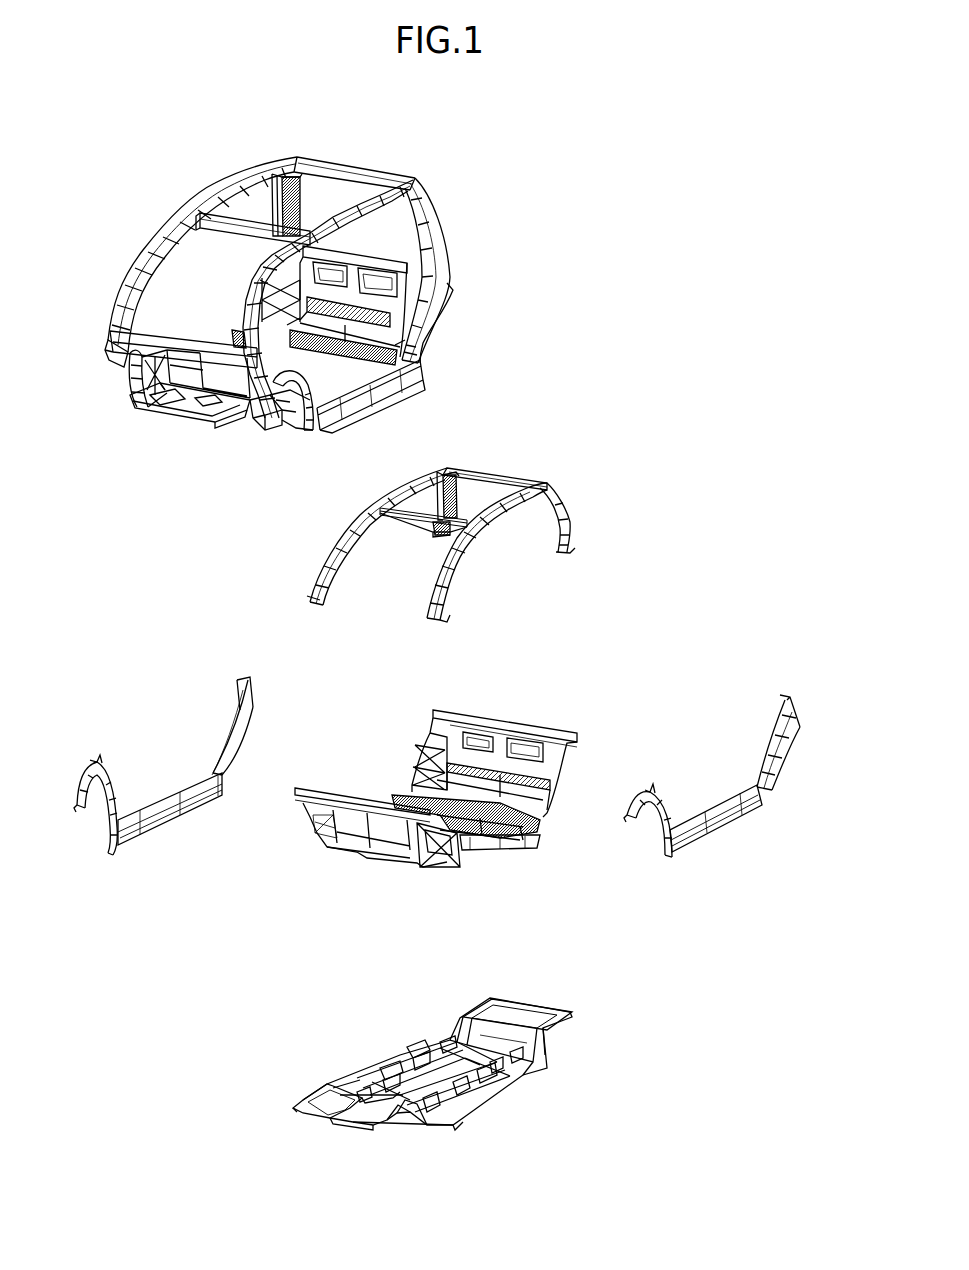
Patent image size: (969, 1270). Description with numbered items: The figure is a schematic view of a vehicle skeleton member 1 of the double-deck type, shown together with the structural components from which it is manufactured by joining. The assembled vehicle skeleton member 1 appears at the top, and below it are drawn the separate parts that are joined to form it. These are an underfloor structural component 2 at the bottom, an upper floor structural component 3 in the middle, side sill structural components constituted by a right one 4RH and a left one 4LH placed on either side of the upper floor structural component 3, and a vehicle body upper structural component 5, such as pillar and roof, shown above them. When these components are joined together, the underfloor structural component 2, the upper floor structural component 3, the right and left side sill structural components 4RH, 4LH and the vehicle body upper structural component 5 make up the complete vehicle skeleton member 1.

The vehicle skeleton member 1 is at (428, 361).
The underfloor structural component 2 is at (547, 1068).
The upper floor structural component 3 is at (560, 732).
The right side sill structural component 4RH is at (230, 700).
The left side sill structural component 4LH is at (778, 707).
The vehicle body upper structural component 5 is at (573, 548).